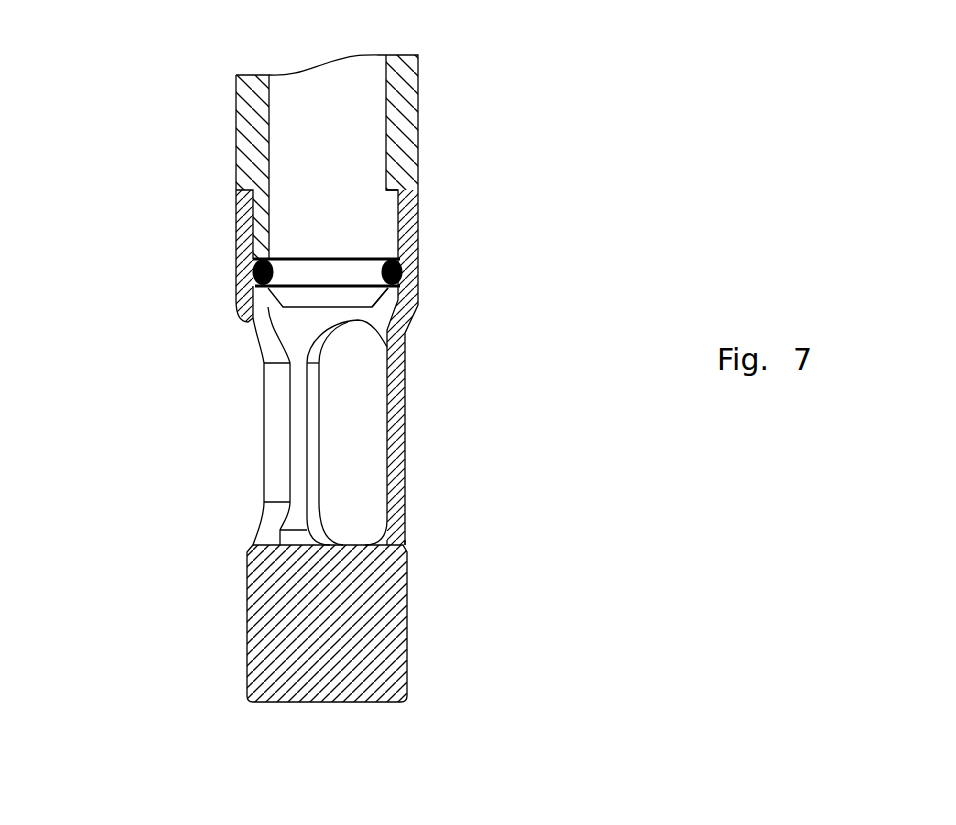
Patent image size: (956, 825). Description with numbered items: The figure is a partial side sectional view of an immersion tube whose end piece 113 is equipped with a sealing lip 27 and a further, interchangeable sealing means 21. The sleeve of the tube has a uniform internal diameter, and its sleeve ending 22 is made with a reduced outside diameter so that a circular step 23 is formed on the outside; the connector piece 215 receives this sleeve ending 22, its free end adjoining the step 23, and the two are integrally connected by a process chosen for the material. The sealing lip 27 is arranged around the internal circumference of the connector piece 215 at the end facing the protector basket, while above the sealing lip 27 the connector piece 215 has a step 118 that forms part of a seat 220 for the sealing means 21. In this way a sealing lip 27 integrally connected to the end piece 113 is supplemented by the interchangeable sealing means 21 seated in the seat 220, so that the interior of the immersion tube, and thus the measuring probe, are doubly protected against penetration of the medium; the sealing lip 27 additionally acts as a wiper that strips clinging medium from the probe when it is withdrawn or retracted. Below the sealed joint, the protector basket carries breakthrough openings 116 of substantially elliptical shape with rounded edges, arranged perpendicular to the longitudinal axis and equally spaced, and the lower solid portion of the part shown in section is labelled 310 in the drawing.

The seat 220 is at (368, 271).
The sleeve ending 22 is at (386, 258).
The circular step 23 is at (237, 200).
The connector piece 215 is at (410, 238).
The sealing means 21 is at (403, 276).
The sealing lip 27 is at (357, 299).
The step 118 is at (400, 295).
The breakthrough openings 116 is at (355, 428).
The end piece 113 is at (521, 462).
The end block 310 is at (345, 620).